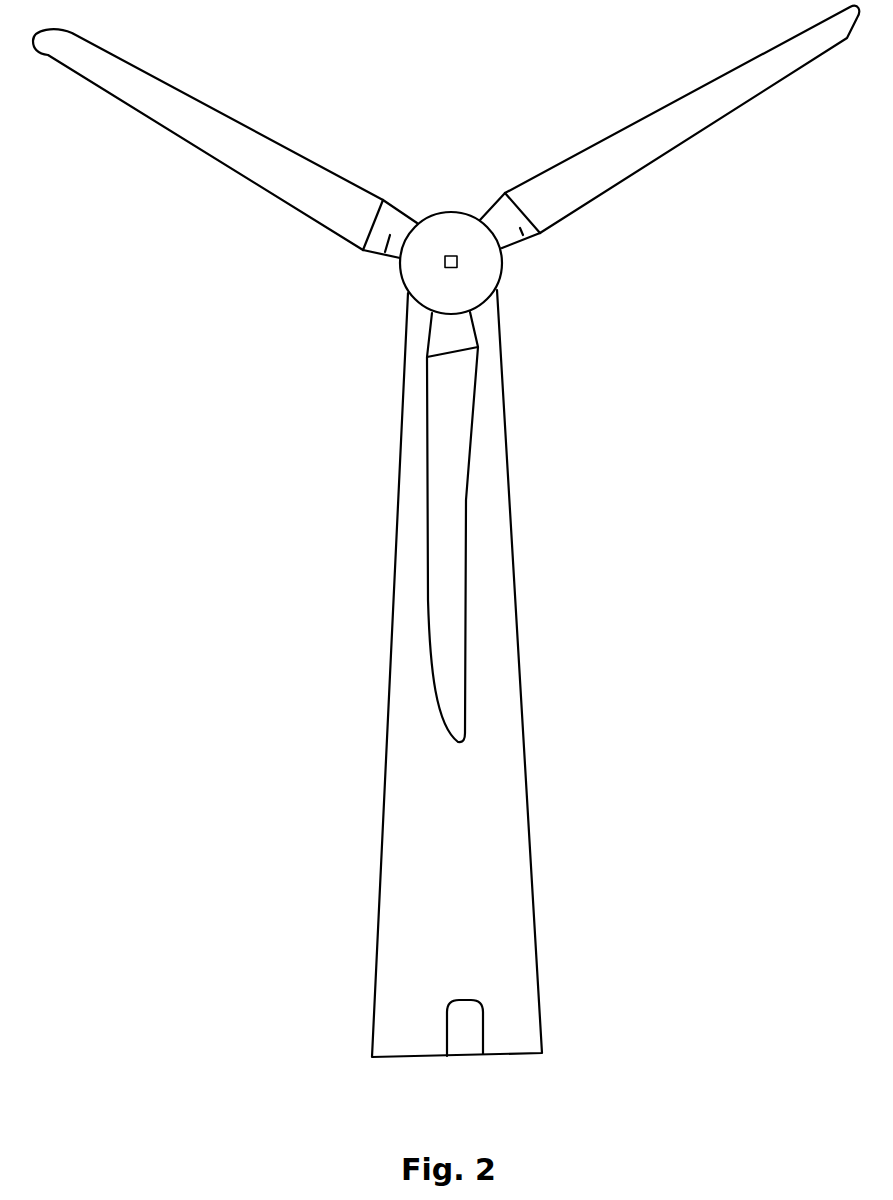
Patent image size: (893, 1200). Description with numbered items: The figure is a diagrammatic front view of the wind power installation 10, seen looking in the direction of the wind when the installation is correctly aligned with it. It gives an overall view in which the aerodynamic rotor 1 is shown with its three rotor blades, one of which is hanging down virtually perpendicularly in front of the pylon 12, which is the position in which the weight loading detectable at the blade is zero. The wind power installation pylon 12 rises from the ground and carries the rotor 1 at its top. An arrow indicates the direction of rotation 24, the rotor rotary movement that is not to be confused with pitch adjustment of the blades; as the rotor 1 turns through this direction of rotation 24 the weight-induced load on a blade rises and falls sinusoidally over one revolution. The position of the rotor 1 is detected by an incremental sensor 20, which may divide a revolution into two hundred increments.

The rotor 1 is at (375, 140).
The direction of rotation 24 is at (398, 190).
The incremental sensor 20 is at (458, 262).
The pylon 12 is at (487, 813).
The wind power installation 10 is at (272, 608).